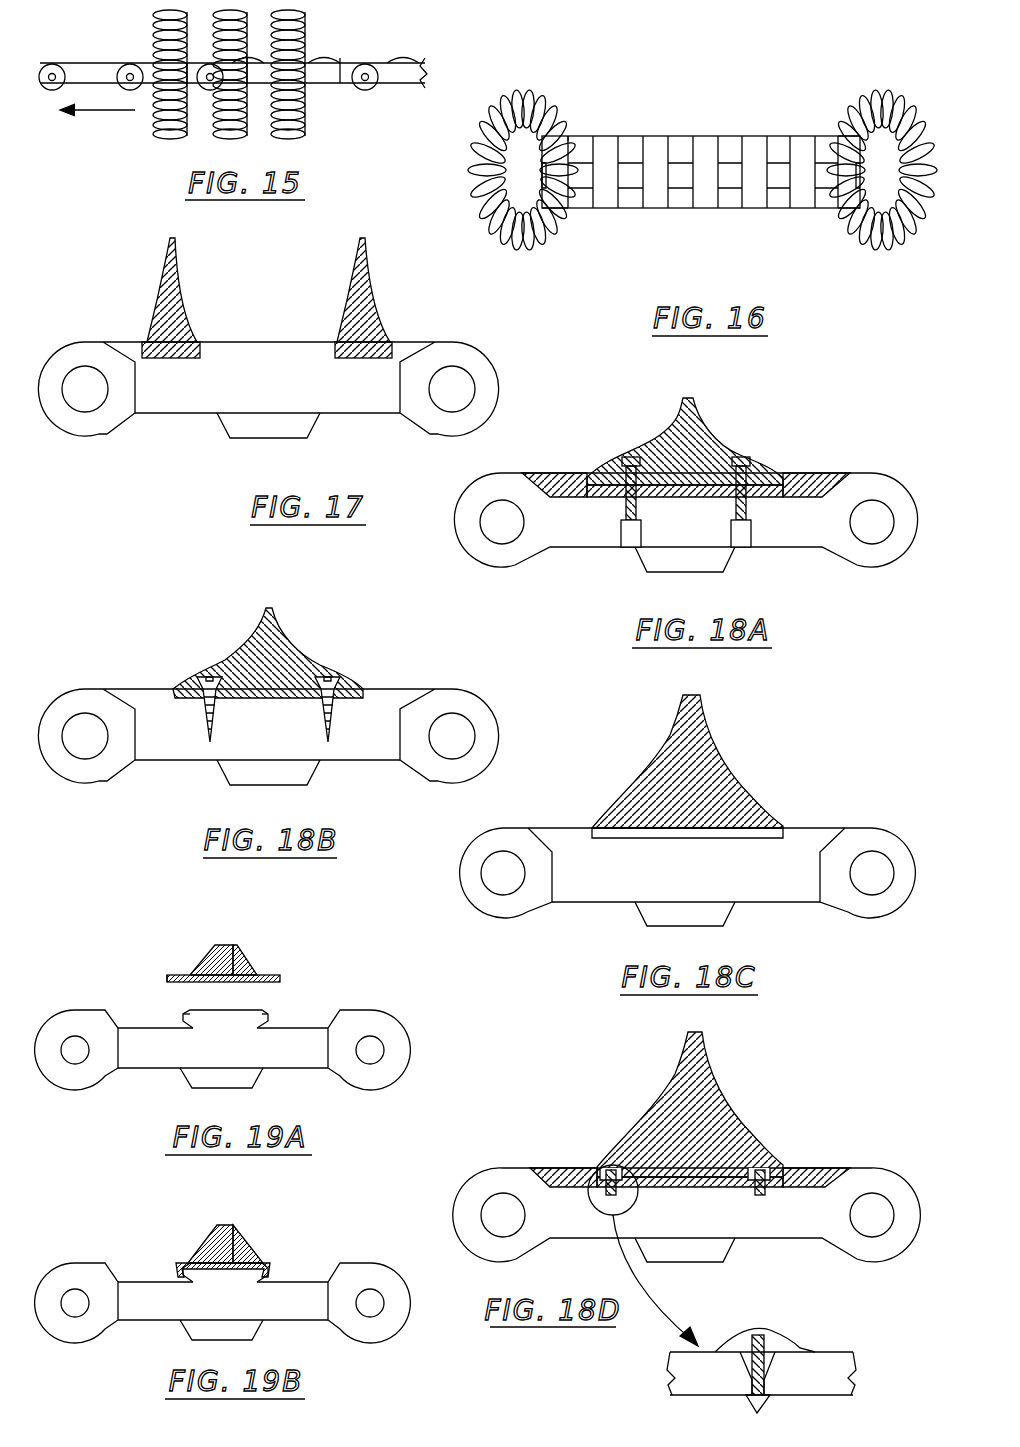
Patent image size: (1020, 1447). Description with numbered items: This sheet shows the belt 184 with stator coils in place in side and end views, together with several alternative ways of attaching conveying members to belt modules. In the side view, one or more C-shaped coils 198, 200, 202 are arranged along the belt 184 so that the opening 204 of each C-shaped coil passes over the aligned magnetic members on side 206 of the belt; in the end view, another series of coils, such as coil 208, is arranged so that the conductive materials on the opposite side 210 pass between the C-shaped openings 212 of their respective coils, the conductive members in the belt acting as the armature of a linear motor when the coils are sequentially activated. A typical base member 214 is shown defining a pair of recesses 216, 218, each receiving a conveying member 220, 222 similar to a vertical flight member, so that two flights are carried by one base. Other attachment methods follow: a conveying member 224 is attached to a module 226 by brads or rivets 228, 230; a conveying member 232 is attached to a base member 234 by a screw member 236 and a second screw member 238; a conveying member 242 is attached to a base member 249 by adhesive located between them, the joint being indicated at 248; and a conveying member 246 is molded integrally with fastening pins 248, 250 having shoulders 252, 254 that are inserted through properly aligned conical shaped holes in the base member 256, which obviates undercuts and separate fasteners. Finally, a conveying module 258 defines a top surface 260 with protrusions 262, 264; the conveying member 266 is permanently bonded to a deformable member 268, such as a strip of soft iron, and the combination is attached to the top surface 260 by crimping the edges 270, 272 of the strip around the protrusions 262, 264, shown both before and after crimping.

In FIG. 15, the belt 184 is at (375, 62).
In FIG. 16, the belt 184 is at (668, 128).
In FIG. 15, the C-shaped coil 198 is at (152, 46).
In FIG. 16, the C-shaped coil 198 is at (905, 256).
In FIG. 15, the C-shaped coil 200 is at (228, 24).
In FIG. 16, the C-shaped coil 200 is at (871, 227).
In FIG. 15, the C-shaped coil 202 is at (310, 22).
In FIG. 16, the C-shaped coil 202 is at (882, 190).
In FIG. 16, the opening 204 is at (822, 134).
In FIG. 16, the side 206 is at (822, 207).
In FIG. 16, the coil 208 is at (575, 226).
In FIG. 16, the side 210 is at (540, 175).
In FIG. 16, the C-shaped opening 212 is at (585, 128).
In FIG. 17, the base member 214 is at (151, 420).
In FIG. 17, the recess 216 is at (168, 359).
In FIG. 17, the recess 218 is at (353, 359).
In FIG. 17, the conveying member 220 is at (160, 292).
In FIG. 17, the conveying member 222 is at (385, 290).
In FIG. 18A, the conveying member 224 is at (700, 412).
In FIG. 18A, the module 226 is at (588, 548).
In FIG. 18A, the rivet 228 is at (640, 508).
In FIG. 18A, the rivet 230 is at (750, 508).
In FIG. 18B, the conveying member 232 is at (275, 618).
In FIG. 18B, the base member 234 is at (160, 765).
In FIG. 18B, the screw member 236 is at (218, 717).
In FIG. 18B, the screw 238 is at (334, 717).
In FIG. 18C, the conveying member 242 is at (712, 720).
In FIG. 18D, the conveying member 246 is at (705, 1052).
In FIG. 18C, the fastening pin 248 is at (710, 840).
In FIG. 18D, the fastening pin 248 is at (600, 1195).
In FIG. 18C, the chain link 249 is at (580, 903).
In FIG. 18D, the fastening pin 250 is at (768, 1196).
In FIG. 18D, the shoulder 252 is at (618, 1196).
In FIG. 18D, the shoulder 254 is at (748, 1190).
In FIG. 18D, the base member 256 is at (853, 1170).
In FIG. 19A, the conveying module 258 is at (302, 1069).
In FIG. 19B, the conveying module 258 is at (302, 1321).
In FIG. 19A, the top surface 260 is at (230, 1012).
In FIG. 19B, the top surface 260 is at (226, 1268).
In FIG. 19A, the protrusion 262 is at (268, 1016).
In FIG. 19A, the protrusion 264 is at (185, 1016).
In FIG. 19A, the conveying member 266 is at (240, 950).
In FIG. 19B, the conveying member 266 is at (230, 1228).
In FIG. 19A, the deformable member 268 is at (280, 980).
In FIG. 19A, the edge 270 is at (262, 970).
In FIG. 19B, the edge 270 is at (270, 1262).
In FIG. 19A, the edge 272 is at (180, 970).
In FIG. 19B, the edge 272 is at (176, 1262).